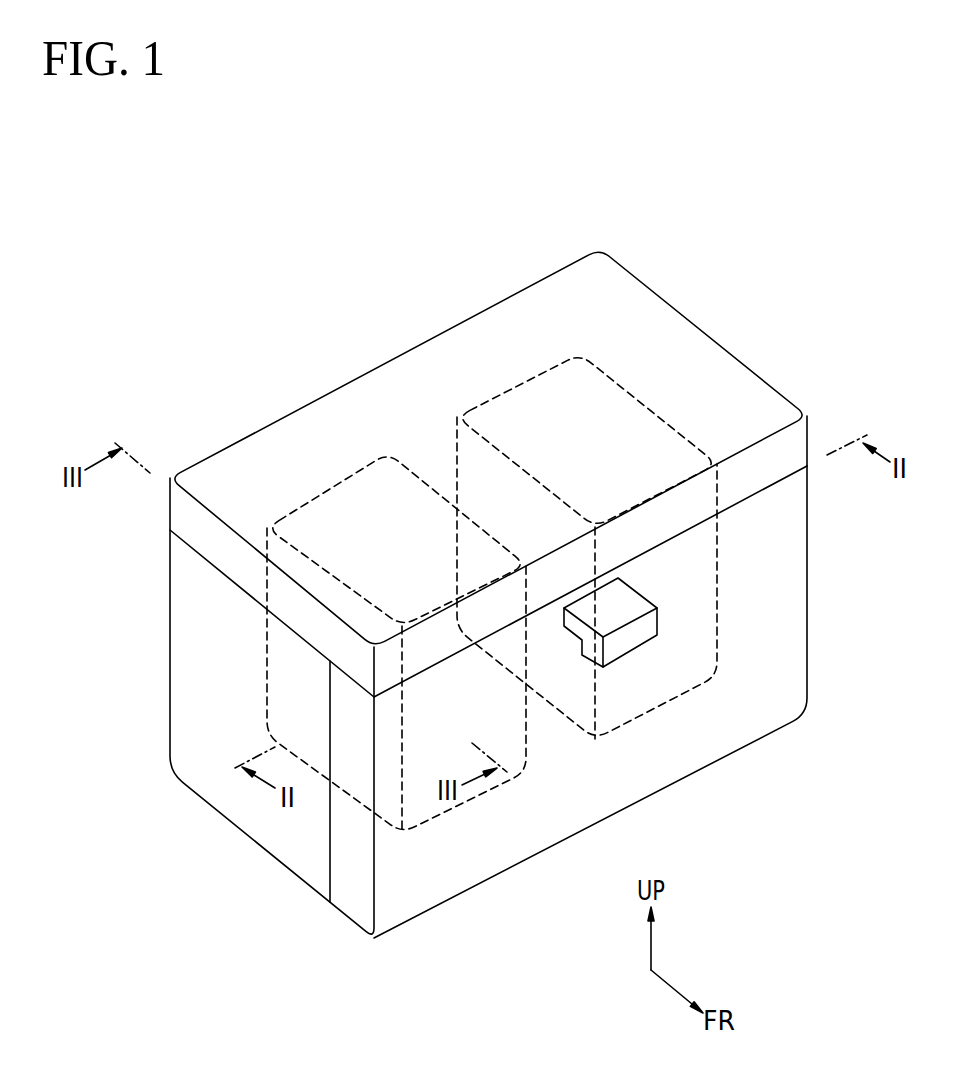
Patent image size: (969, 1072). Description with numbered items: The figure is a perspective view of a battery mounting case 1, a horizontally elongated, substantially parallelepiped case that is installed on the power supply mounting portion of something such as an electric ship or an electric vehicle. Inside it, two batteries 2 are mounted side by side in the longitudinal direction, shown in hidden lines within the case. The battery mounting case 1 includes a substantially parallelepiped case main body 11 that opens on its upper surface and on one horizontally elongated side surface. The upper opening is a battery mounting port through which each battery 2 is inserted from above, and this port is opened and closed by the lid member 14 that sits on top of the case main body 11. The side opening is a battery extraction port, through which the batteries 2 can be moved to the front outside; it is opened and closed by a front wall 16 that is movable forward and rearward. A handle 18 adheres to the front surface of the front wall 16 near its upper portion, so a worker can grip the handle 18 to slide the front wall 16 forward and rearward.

The battery mounting case 1 is at (481, 582).
The battery 2 is at (338, 478).
The case main body 11 is at (243, 812).
The lid member 14 is at (223, 477).
The front wall 16 is at (462, 857).
The handle 18 is at (630, 635).